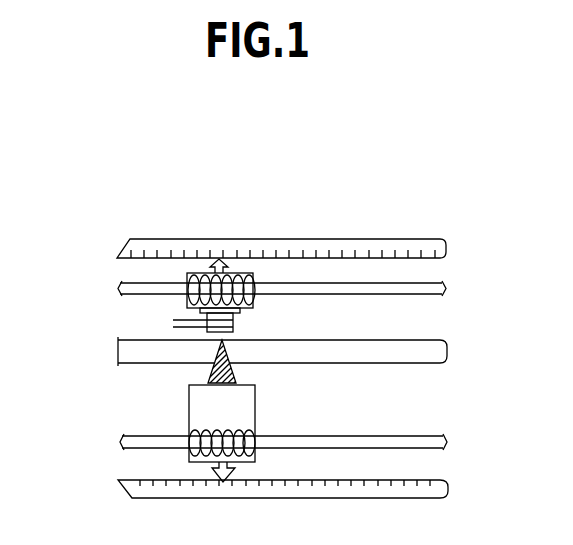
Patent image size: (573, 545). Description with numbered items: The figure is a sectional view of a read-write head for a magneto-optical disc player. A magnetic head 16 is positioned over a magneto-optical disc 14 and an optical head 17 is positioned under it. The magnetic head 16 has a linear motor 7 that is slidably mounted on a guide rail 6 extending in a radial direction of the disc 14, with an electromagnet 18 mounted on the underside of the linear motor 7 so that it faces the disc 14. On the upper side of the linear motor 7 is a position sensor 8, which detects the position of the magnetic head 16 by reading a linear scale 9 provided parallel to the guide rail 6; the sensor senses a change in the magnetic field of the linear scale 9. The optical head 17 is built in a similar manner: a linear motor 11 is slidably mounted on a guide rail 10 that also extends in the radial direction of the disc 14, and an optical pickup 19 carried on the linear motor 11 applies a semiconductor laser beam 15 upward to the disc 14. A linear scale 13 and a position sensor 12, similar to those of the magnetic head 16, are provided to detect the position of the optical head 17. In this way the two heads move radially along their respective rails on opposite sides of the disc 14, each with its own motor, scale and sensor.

The guide rail 6 is at (443, 290).
The linear motor 7 is at (255, 278).
The position sensor 8 is at (223, 258).
The linear scale 9 is at (418, 240).
The guide rail 10 is at (445, 446).
The linear motor 11 is at (257, 456).
The position sensor 12 is at (215, 468).
The linear scale 13 is at (443, 490).
The magneto-optical disc 14 is at (437, 339).
The semiconductor laser beam 15 is at (212, 355).
The magnetic head 16 is at (117, 313).
The optical head 17 is at (102, 443).
The electromagnet 18 is at (237, 322).
The optical pickup 19 is at (255, 405).